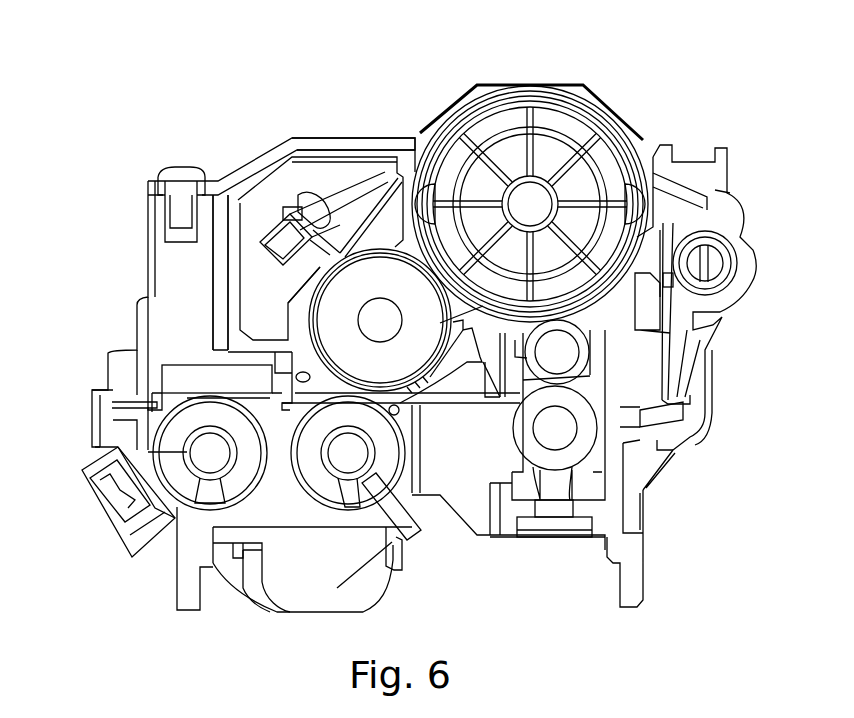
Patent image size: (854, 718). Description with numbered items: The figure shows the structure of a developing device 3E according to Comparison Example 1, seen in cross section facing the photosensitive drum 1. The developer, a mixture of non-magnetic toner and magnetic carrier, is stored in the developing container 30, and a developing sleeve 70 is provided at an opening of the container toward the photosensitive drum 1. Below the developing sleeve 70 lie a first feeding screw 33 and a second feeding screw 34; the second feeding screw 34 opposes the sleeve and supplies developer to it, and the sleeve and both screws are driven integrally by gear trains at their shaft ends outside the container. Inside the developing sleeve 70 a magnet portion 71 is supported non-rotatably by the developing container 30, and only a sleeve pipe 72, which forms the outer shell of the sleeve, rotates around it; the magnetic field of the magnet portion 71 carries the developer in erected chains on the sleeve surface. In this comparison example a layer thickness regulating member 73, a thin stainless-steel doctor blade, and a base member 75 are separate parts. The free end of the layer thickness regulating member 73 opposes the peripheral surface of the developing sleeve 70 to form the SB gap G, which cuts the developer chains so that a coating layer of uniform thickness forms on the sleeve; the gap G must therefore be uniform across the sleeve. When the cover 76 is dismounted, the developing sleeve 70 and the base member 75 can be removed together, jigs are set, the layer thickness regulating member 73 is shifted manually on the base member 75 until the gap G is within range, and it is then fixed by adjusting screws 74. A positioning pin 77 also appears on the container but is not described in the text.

The developing device 3E is at (196, 98).
The developing container 30 is at (135, 250).
The positioning pin 77 is at (178, 166).
The cover 76 is at (368, 137).
The layer thickness regulating member 73 is at (283, 192).
The adjusting screws 74 is at (317, 212).
The photosensitive drum 1 is at (607, 105).
The SB gap G is at (382, 232).
The sleeve pipe 72 is at (312, 296).
The base member 75 is at (285, 302).
The magnet portion 71 is at (418, 335).
The developing sleeve 70 is at (428, 385).
The first feeding screw 33 is at (210, 497).
The second feeding screw 34 is at (368, 487).